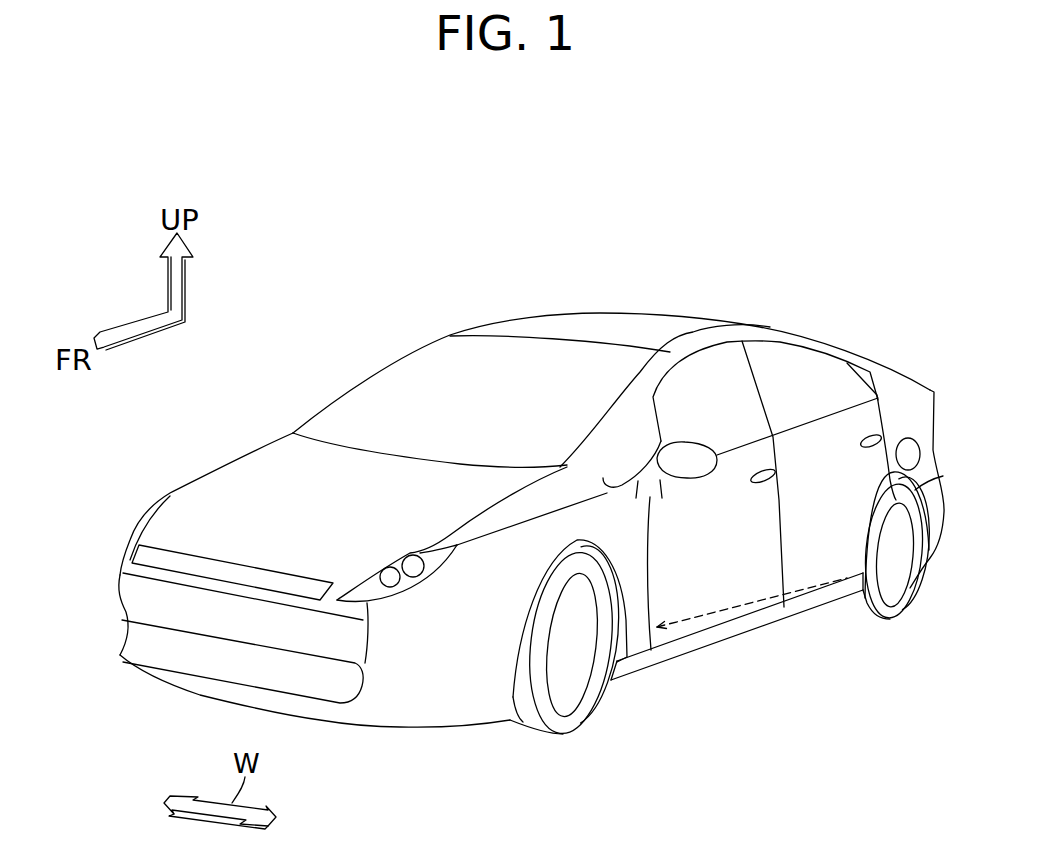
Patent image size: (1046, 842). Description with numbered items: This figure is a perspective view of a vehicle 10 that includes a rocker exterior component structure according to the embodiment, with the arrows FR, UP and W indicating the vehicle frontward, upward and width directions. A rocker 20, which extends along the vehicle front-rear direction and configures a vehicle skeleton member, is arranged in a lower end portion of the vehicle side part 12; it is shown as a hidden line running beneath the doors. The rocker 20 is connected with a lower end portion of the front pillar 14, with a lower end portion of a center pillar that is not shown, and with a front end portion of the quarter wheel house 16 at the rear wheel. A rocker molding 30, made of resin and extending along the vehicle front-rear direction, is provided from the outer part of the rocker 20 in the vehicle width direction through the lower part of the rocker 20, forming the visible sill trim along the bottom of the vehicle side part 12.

The vehicle 10 is at (637, 245).
The vehicle side part 12 is at (694, 635).
The front pillar 14 is at (638, 590).
The quarter wheel house 16 is at (867, 535).
The rocker 20 is at (762, 601).
The rocker molding 30 is at (763, 627).